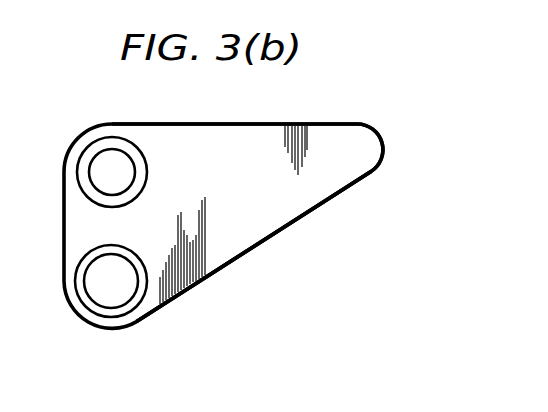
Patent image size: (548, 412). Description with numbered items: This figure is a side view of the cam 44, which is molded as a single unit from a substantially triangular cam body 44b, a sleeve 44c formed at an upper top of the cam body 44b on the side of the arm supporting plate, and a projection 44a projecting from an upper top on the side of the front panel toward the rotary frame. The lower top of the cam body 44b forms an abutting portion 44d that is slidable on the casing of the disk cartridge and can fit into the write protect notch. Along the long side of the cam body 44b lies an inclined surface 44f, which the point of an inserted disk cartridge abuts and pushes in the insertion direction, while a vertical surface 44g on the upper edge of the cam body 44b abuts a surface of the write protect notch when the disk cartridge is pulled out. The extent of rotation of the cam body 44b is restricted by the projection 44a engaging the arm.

The cam 44 is at (63, 240).
The projection 44a is at (132, 300).
The cam body 44b is at (225, 262).
The sleeve 44c is at (126, 138).
The abutting portion 44d is at (384, 147).
The inclined surface 44f is at (308, 215).
The vertical surface 44g is at (248, 124).